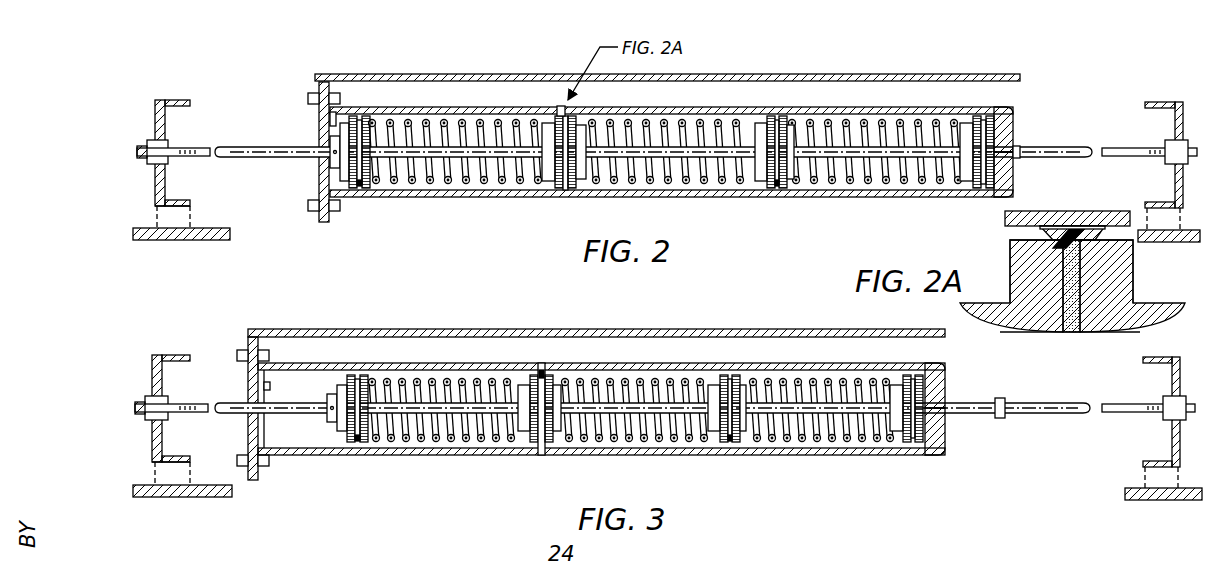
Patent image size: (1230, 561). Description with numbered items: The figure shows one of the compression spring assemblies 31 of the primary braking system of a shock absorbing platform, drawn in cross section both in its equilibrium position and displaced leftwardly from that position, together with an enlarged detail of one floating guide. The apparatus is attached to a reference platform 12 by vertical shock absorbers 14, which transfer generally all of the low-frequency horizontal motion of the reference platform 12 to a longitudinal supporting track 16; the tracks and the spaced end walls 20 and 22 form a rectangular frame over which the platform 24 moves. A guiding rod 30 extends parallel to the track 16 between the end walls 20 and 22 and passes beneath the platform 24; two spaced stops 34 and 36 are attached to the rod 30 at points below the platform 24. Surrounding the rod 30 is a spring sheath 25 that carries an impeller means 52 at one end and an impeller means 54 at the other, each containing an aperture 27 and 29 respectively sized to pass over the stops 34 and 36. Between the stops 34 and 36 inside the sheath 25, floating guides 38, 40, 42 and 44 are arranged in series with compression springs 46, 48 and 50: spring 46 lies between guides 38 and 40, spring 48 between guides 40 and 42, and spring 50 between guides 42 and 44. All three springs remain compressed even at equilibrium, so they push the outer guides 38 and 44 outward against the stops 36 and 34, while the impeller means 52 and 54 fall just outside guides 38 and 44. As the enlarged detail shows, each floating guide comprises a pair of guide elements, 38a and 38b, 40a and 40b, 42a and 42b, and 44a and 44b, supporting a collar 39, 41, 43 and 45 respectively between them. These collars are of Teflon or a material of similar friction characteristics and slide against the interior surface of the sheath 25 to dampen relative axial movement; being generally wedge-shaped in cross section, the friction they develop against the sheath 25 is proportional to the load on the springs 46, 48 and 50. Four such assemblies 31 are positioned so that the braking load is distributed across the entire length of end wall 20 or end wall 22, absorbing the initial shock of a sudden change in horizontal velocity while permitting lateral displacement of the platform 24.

In FIG. 2, the reference platform 12 is at (204, 232).
In FIG. 3, the reference platform 12 is at (203, 489).
In FIG. 2, the vertical shock absorber 14 is at (150, 212).
In FIG. 3, the vertical shock absorber 14 is at (148, 468).
In FIG. 2, the longitudinal supporting track 16 is at (152, 212).
In FIG. 3, the longitudinal supporting track 16 is at (150, 468).
In FIG. 2, the end wall 20 is at (1181, 108).
In FIG. 3, the end wall 20 is at (1152, 428).
In FIG. 2, the end wall 22 is at (157, 108).
In FIG. 3, the end wall 22 is at (154, 364).
In FIG. 2, the platform 24 is at (479, 74).
In FIG. 3, the platform 24 is at (500, 329).
In FIG. 2, the spring sheath 25 is at (490, 108).
In FIG. 2A, the spring sheath 25 is at (1130, 211).
In FIG. 3, the spring sheath 25 is at (538, 374).
In FIG. 2, the aperture 27 is at (326, 140).
In FIG. 3, the aperture 27 is at (257, 396).
In FIG. 2, the aperture 29 is at (1012, 177).
In FIG. 3, the aperture 29 is at (945, 425).
In FIG. 2, the guiding rod 30 is at (251, 147).
In FIG. 3, the guiding rod 30 is at (225, 403).
In FIG. 2, the compression spring assembly 31 is at (446, 207).
In FIG. 3, the compression spring assembly 31 is at (418, 472).
In FIG. 2, the stop 34 is at (1020, 152).
In FIG. 3, the stop 34 is at (1003, 398).
In FIG. 2, the stop 36 is at (332, 164).
In FIG. 3, the stop 36 is at (329, 414).
In FIG. 2, the floating guide 38 is at (391, 160).
In FIG. 3, the floating guide 38 is at (366, 416).
In FIG. 2, the guide element 38a is at (352, 124).
In FIG. 3, the guide element 38a is at (350, 384).
In FIG. 2, the guide element 38b is at (367, 122).
In FIG. 3, the guide element 38b is at (365, 384).
In FIG. 2, the collar 39 is at (358, 190).
In FIG. 3, the collar 39 is at (350, 444).
In FIG. 2, the floating guide 40 is at (544, 160).
In FIG. 2A, the floating guide 40 is at (1072, 293).
In FIG. 3, the floating guide 40 is at (549, 416).
In FIG. 2, the guide element 40a is at (545, 128).
In FIG. 2A, the guide element 40a is at (1045, 322).
In FIG. 3, the guide element 40a is at (525, 390).
In FIG. 2, the guide element 40b is at (576, 122).
In FIG. 2A, the guide element 40b is at (1103, 322).
In FIG. 3, the guide element 40b is at (555, 390).
In FIG. 2, the collar 41 is at (566, 190).
In FIG. 2A, the collar 41 is at (1045, 232).
In FIG. 3, the collar 41 is at (547, 386).
In FIG. 2, the floating guide 42 is at (772, 161).
In FIG. 3, the floating guide 42 is at (760, 416).
In FIG. 2, the guide element 42a is at (758, 138).
In FIG. 3, the guide element 42a is at (723, 390).
In FIG. 2, the guide element 42b is at (786, 124).
In FIG. 3, the guide element 42b is at (740, 385).
In FIG. 2, the collar 43 is at (770, 188).
In FIG. 3, the collar 43 is at (722, 446).
In FIG. 2, the floating guide 44 is at (975, 161).
In FIG. 3, the floating guide 44 is at (907, 416).
In FIG. 2, the guide element 44a is at (963, 130).
In FIG. 3, the guide element 44a is at (898, 390).
In FIG. 2, the guide element 44b is at (991, 120).
In FIG. 3, the guide element 44b is at (921, 384).
In FIG. 2, the collar 45 is at (983, 118).
In FIG. 3, the collar 45 is at (912, 446).
In FIG. 2, the compression spring 46 is at (496, 184).
In FIG. 3, the compression spring 46 is at (462, 442).
In FIG. 2, the compression spring 48 is at (706, 185).
In FIG. 3, the compression spring 48 is at (664, 442).
In FIG. 2, the compression spring 50 is at (866, 185).
In FIG. 3, the compression spring 50 is at (835, 442).
In FIG. 2, the impeller means 52 is at (331, 117).
In FIG. 3, the impeller means 52 is at (270, 385).
In FIG. 2, the impeller means 54 is at (1012, 122).
In FIG. 3, the impeller means 54 is at (945, 388).